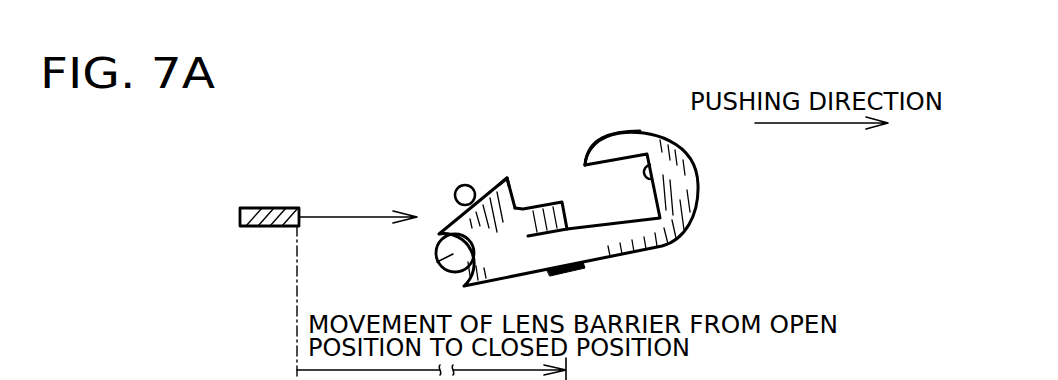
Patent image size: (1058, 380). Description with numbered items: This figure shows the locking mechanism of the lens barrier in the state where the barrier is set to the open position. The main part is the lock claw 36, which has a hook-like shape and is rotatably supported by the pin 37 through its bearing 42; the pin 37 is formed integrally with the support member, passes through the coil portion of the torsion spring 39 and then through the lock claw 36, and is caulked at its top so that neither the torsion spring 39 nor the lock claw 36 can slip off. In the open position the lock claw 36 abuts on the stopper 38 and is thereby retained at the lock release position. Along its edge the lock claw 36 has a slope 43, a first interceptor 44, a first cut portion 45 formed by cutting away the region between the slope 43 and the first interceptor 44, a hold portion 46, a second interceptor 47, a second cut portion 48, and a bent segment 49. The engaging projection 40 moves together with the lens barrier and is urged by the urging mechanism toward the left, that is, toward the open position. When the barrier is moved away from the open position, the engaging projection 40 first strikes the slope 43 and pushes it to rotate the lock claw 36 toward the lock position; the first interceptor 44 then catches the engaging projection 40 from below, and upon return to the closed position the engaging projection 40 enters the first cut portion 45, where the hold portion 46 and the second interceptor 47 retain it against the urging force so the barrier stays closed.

The lock claw 36 is at (645, 118).
The pin 37 is at (437, 262).
The stopper 38 is at (462, 186).
The torsion spring 39 is at (594, 262).
The engaging projection 40 is at (272, 207).
The bearing 42 is at (445, 234).
The slope 43 is at (505, 176).
The first interceptor 44 is at (615, 131).
The first cut portion 45 is at (581, 172).
The hold portion 46 is at (511, 189).
The second interceptor 47 is at (546, 204).
The second cut portion 48 is at (652, 181).
The bent segment 49 is at (568, 214).